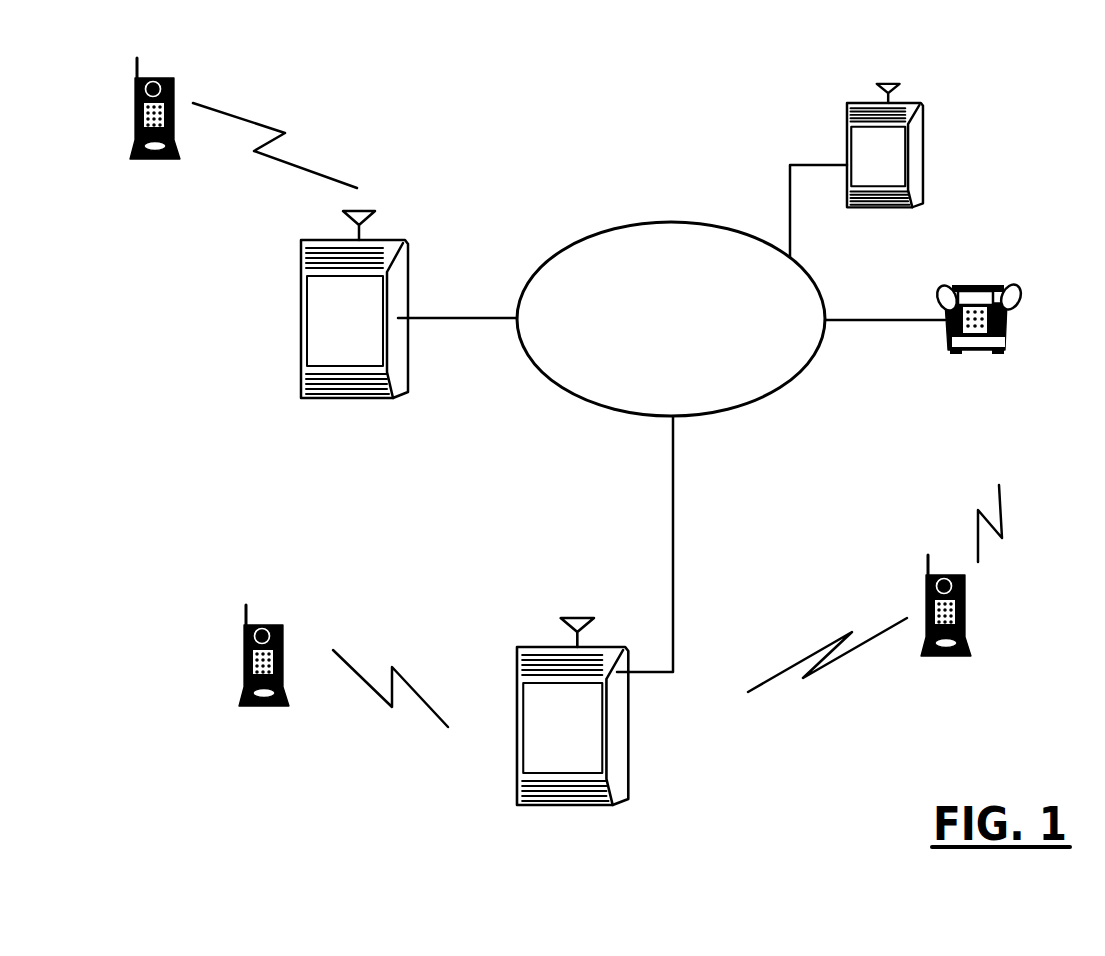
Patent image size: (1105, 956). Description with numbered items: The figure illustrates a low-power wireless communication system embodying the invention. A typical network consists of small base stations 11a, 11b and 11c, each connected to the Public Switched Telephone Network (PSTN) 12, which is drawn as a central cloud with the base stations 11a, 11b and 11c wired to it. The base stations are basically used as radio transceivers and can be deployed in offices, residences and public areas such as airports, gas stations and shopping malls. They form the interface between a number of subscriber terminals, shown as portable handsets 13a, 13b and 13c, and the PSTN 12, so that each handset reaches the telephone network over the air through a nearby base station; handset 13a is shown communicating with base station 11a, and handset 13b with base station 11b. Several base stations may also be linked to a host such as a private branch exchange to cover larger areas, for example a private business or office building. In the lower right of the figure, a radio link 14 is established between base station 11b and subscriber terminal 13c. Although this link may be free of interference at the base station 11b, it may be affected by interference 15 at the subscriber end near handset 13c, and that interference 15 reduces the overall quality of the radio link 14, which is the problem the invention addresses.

The base station 11a is at (398, 262).
The base station 11b is at (622, 745).
The base station 11c is at (923, 125).
The Public Switched Telephone Network (PSTN) 12 is at (603, 227).
The portable handset 13a is at (167, 88).
The portable handset 13b is at (280, 630).
The portable handset 13c is at (963, 630).
The radio link 14 is at (845, 657).
The interference 15 is at (1002, 507).